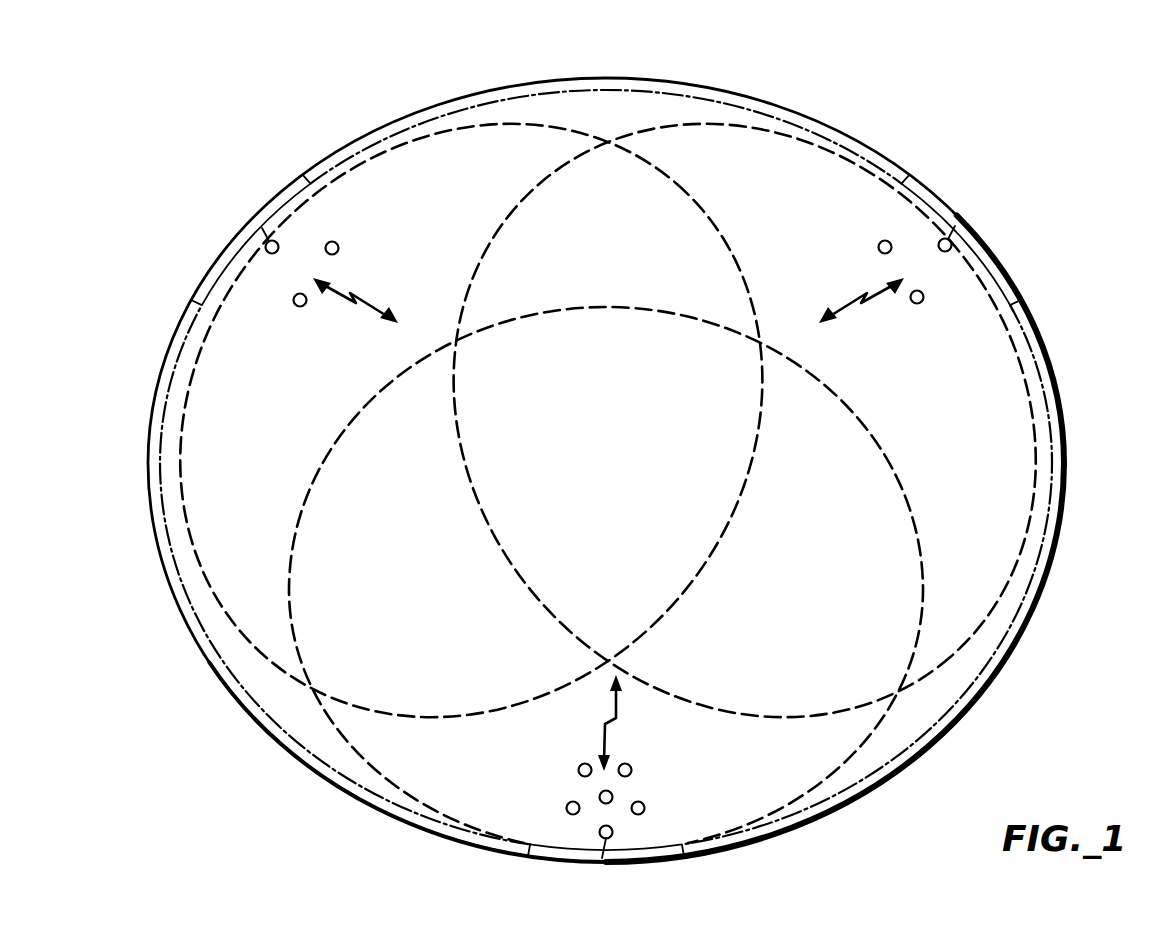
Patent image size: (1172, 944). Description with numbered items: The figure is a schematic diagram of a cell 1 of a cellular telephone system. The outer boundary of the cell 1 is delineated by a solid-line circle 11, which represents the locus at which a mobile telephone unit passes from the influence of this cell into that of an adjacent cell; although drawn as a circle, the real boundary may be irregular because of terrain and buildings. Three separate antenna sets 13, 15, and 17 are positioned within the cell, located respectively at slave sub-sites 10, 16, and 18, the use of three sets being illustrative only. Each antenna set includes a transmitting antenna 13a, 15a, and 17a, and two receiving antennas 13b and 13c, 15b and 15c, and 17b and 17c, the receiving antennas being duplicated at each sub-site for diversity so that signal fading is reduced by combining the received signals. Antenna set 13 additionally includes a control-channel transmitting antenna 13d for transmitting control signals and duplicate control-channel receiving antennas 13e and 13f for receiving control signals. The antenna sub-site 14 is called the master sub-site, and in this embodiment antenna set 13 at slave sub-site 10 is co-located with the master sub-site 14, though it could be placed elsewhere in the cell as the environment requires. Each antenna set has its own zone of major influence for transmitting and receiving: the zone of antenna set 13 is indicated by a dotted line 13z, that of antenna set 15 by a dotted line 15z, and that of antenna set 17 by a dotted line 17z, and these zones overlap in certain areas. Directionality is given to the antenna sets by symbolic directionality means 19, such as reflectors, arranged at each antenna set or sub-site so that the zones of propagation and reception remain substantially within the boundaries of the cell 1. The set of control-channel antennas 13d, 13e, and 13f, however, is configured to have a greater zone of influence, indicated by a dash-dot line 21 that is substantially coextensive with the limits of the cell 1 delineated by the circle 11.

The cell 1 is at (428, 107).
The slave sub-site 10 is at (620, 830).
The circle 11 is at (363, 137).
The antenna set 13 is at (597, 792).
The transmitting antenna 13a is at (600, 852).
The receiving antenna 13b is at (569, 801).
The receiving antenna 13c is at (643, 803).
The control-channel transmitting antenna 13d is at (609, 803).
The control-channel receiving antenna 13e is at (583, 762).
The control-channel receiving antenna 13f is at (627, 762).
The dotted line 13z is at (306, 492).
The master sub-site 14 is at (630, 724).
The antenna set 15 is at (298, 284).
The transmitting antenna 15a is at (259, 219).
The receiving antenna 15b is at (324, 302).
The receiving antenna 15c is at (334, 242).
The dotted line 15z is at (690, 185).
The slave sub-site 16 is at (262, 204).
The antenna set 17 is at (918, 284).
The transmitting antenna 17a is at (960, 218).
The receiving antenna 17b is at (884, 241).
The receiving antenna 17c is at (917, 304).
The dotted line 17z is at (484, 536).
The slave sub-site 18 is at (989, 204).
The directionality means 19 is at (606, 534).
The dash-dot line 21 is at (893, 792).